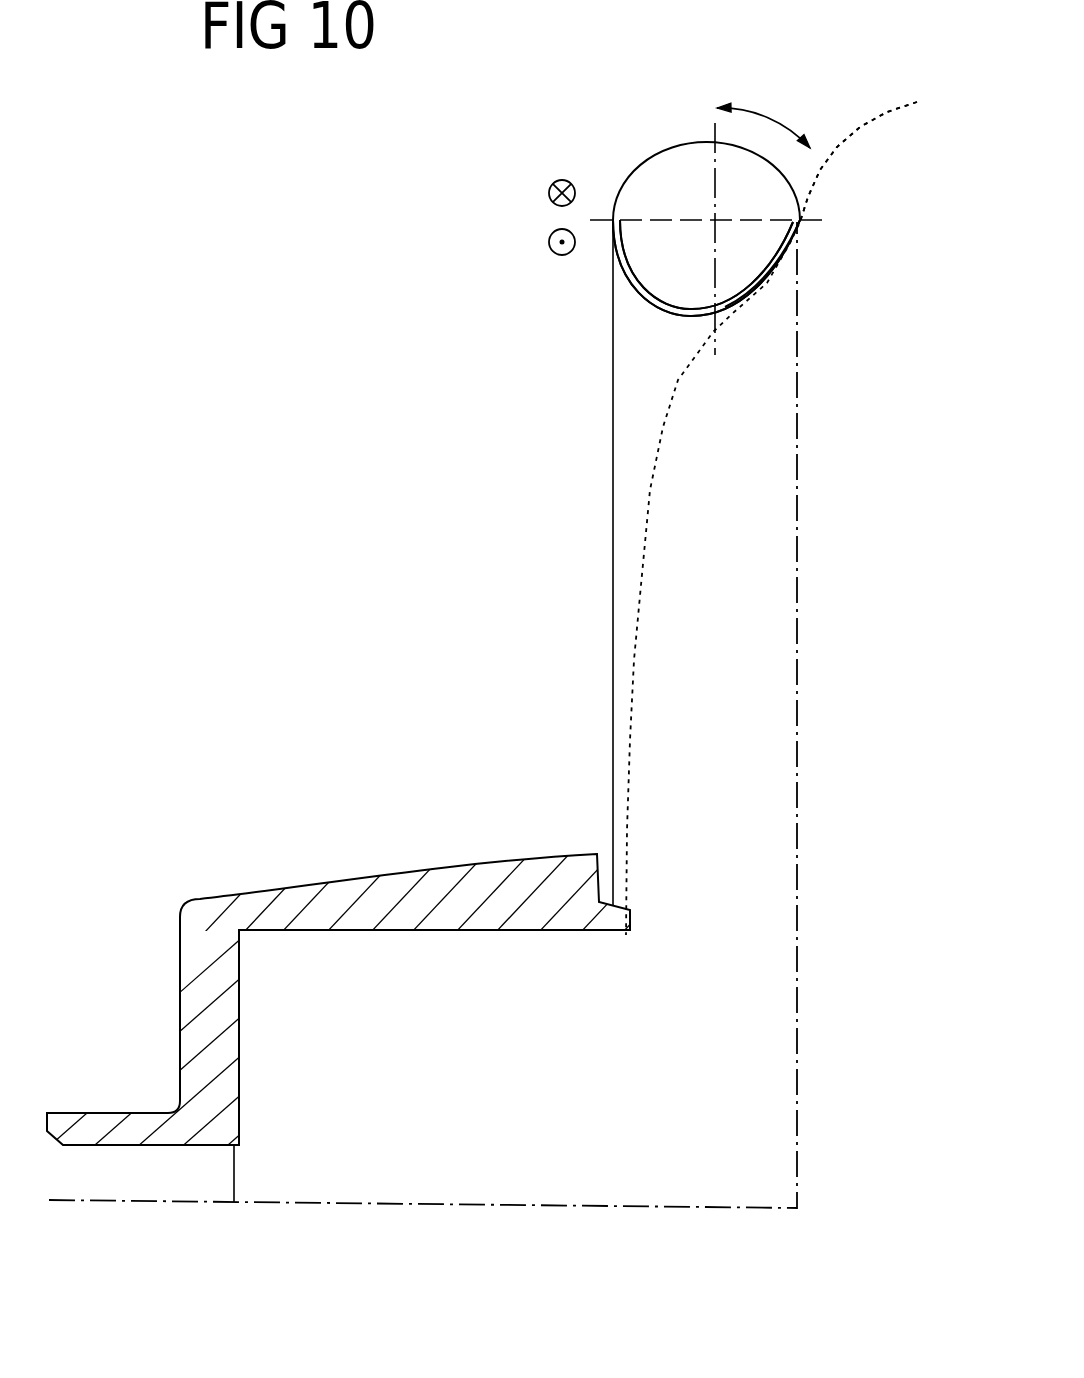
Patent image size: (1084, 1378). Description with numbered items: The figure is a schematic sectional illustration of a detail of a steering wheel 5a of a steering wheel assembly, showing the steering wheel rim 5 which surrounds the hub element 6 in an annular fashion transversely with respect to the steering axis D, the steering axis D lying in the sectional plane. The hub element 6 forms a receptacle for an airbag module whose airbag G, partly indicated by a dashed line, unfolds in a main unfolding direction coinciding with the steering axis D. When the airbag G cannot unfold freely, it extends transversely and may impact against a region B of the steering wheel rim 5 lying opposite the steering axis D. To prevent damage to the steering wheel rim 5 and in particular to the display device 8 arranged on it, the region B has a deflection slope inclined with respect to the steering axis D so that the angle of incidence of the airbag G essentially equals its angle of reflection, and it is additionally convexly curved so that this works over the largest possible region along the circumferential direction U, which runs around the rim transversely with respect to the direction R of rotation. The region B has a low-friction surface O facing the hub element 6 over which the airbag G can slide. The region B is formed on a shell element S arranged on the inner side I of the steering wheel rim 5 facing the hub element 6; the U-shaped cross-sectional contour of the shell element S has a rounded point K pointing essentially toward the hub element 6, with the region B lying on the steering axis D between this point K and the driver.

The steering wheel rim 5 is at (672, 175).
The steering wheel 5a is at (512, 377).
The hub element 6 is at (437, 896).
The display device 8 is at (817, 202).
The direction of rotation R is at (543, 217).
The circumferential direction U is at (763, 107).
The airbag G is at (641, 585).
The steering axis D is at (666, 1208).
The rounded point K is at (678, 313).
The inner side I is at (690, 234).
The surface O is at (787, 252).
The region B is at (768, 275).
The shell element S is at (753, 286).